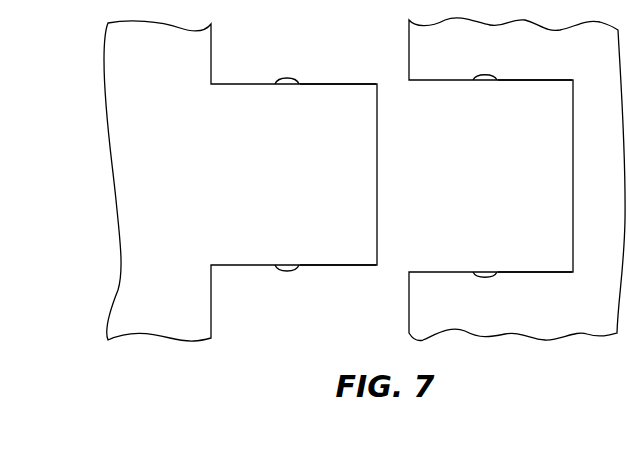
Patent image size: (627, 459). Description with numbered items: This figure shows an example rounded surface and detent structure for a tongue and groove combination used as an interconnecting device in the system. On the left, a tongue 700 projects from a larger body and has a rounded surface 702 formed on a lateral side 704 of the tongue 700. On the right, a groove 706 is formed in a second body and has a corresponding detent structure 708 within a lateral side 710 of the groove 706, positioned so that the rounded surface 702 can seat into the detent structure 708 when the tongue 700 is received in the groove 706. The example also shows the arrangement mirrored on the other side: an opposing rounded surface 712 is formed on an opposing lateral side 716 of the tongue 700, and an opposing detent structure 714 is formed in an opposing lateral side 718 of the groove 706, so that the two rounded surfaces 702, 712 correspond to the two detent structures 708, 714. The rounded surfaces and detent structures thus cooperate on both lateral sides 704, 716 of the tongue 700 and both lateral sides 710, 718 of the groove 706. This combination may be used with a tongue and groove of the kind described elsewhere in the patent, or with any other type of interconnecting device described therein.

The tongue 700 is at (240, 181).
The rounded surface 702 is at (285, 78).
The lateral side 704 is at (339, 83).
The groove 706 is at (517, 179).
The detent structure 708 is at (488, 76).
The lateral side 710 is at (528, 81).
The opposing rounded surface 712 is at (287, 272).
The opposing detent structure 714 is at (483, 276).
The opposing lateral side of the tongue 716 is at (325, 266).
The opposing lateral side of the groove 718 is at (543, 271).